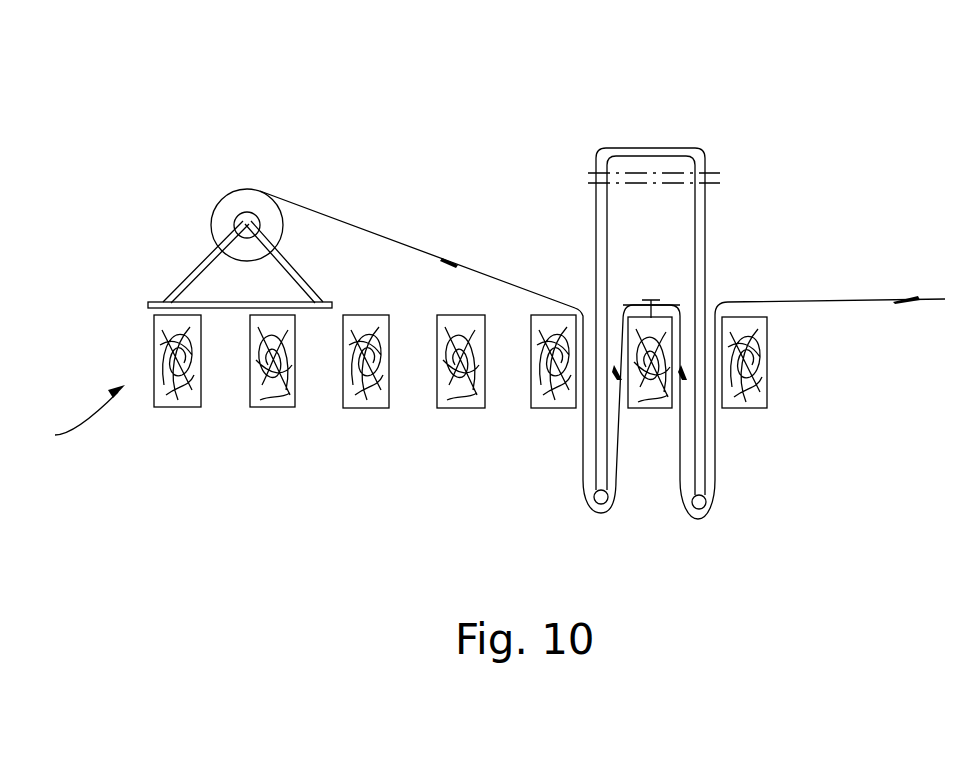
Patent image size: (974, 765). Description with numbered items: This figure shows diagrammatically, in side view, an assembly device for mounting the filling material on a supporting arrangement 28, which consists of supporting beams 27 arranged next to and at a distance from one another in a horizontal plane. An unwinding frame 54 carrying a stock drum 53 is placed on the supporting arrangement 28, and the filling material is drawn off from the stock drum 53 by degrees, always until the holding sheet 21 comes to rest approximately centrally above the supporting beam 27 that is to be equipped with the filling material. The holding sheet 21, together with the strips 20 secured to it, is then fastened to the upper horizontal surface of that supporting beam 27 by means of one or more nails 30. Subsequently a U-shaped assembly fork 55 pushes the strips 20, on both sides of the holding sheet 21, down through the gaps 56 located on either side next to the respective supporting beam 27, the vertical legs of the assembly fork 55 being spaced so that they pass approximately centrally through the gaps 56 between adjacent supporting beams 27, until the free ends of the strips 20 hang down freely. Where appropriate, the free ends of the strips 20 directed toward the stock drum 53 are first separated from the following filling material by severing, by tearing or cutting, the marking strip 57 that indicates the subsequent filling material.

The strips 20 is at (332, 213).
The holding sheet 21 is at (633, 303).
The supporting beams 27 is at (180, 403).
The supporting arrangement 28 is at (84, 410).
The nails 30 is at (652, 297).
The stock drum 53 is at (232, 197).
The unwinding frame 54 is at (202, 263).
The U-shaped assembly fork 55 is at (683, 150).
The gaps 56 is at (574, 414).
The marking strip 57 is at (450, 256).